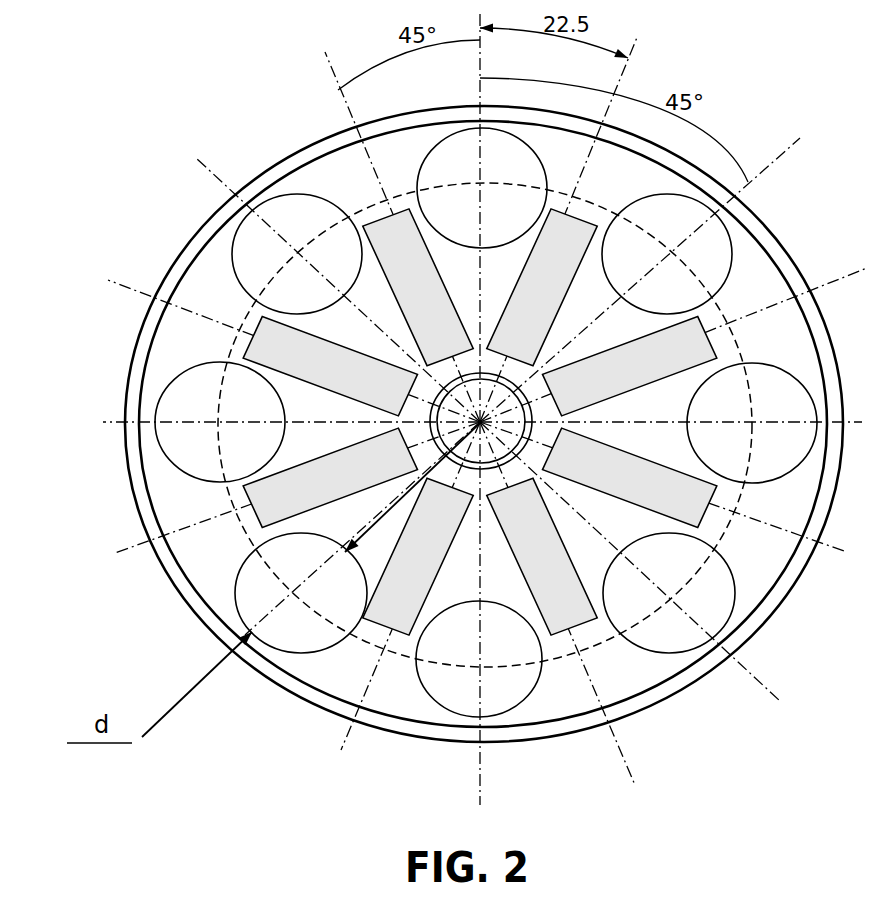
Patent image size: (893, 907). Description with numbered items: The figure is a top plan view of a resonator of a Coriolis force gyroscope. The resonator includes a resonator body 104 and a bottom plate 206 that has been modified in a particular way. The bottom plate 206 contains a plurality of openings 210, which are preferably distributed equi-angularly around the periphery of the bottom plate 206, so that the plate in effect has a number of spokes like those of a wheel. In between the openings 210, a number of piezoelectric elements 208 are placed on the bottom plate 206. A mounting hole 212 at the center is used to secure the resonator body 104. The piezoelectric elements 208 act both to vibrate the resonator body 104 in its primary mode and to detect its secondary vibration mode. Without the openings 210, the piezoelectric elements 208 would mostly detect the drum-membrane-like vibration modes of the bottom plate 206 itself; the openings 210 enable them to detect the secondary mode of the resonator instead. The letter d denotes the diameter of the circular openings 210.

The resonator body 104 is at (793, 273).
The bottom plate 206 is at (477, 571).
The piezoelectric elements 208 is at (253, 352).
The openings 210 is at (287, 197).
The mounting hole 212 is at (512, 445).